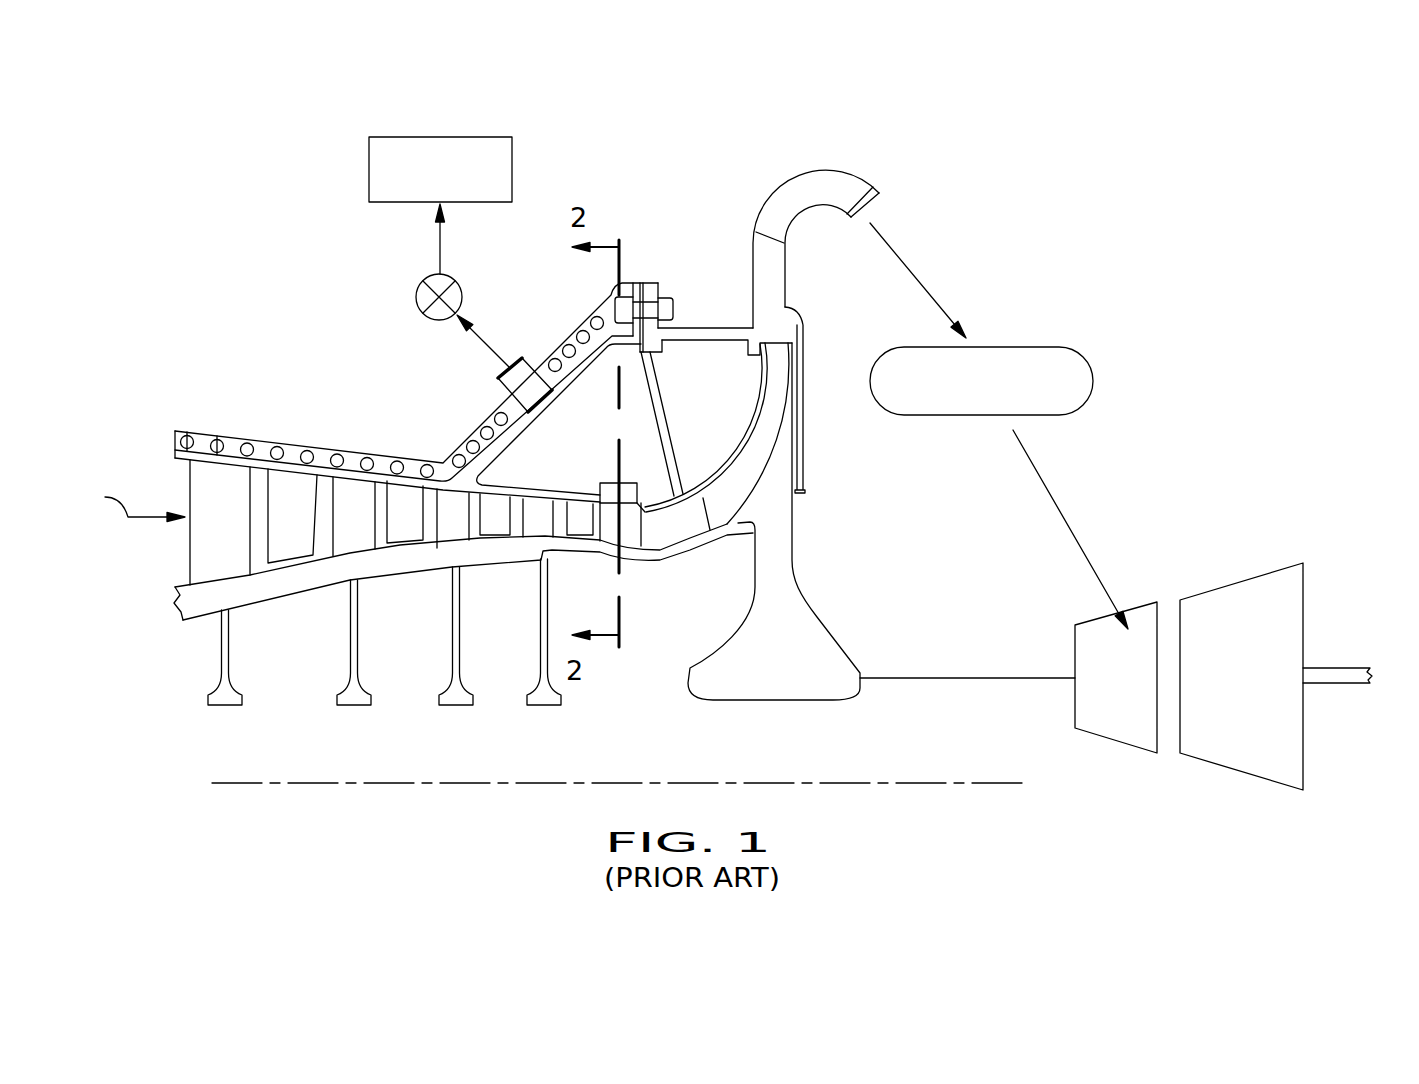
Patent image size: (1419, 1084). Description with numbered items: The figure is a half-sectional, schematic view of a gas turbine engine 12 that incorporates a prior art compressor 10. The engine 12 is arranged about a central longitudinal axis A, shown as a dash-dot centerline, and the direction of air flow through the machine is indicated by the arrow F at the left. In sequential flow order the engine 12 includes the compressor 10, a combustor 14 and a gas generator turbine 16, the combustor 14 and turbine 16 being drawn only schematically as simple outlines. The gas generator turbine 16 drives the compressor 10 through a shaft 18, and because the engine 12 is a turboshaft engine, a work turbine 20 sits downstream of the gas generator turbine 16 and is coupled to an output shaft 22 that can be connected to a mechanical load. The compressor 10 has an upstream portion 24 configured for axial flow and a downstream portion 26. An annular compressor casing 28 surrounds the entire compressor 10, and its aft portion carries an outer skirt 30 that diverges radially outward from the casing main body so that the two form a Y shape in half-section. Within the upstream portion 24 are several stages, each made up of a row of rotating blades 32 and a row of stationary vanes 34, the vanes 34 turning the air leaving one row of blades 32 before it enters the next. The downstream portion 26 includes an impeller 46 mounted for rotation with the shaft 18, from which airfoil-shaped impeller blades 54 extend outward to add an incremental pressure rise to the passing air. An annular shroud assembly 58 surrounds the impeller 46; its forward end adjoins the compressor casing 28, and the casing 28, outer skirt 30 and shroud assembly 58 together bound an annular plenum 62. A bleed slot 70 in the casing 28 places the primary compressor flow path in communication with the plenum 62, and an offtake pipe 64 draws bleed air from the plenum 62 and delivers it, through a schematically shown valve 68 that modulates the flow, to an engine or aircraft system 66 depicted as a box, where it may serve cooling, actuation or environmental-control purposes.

The compressor 10 is at (290, 316).
The gas turbine engine 12 is at (962, 162).
The combustor 14 is at (996, 397).
The gas generator turbine 16 is at (1137, 697).
The shaft 18 is at (965, 677).
The work turbine 20 is at (1264, 697).
The output shaft 22 is at (1343, 668).
The upstream portion 24 is at (297, 423).
The downstream portion 26 is at (703, 568).
The compressor casing 28 is at (387, 452).
The outer skirt 30 is at (587, 323).
The blades 32 is at (238, 532).
The vanes 34 is at (310, 529).
The impeller 46 is at (791, 662).
The impeller blades 54 is at (748, 465).
The shroud assembly 58 is at (763, 384).
The plenum 62 is at (598, 428).
The offtake pipes 64 is at (500, 385).
The engine or aircraft system 66 is at (453, 180).
The valve 68 is at (450, 280).
The bleed slot 70 is at (603, 482).
The flow direction arrow F is at (132, 501).
The central longitudinal axis A is at (302, 783).